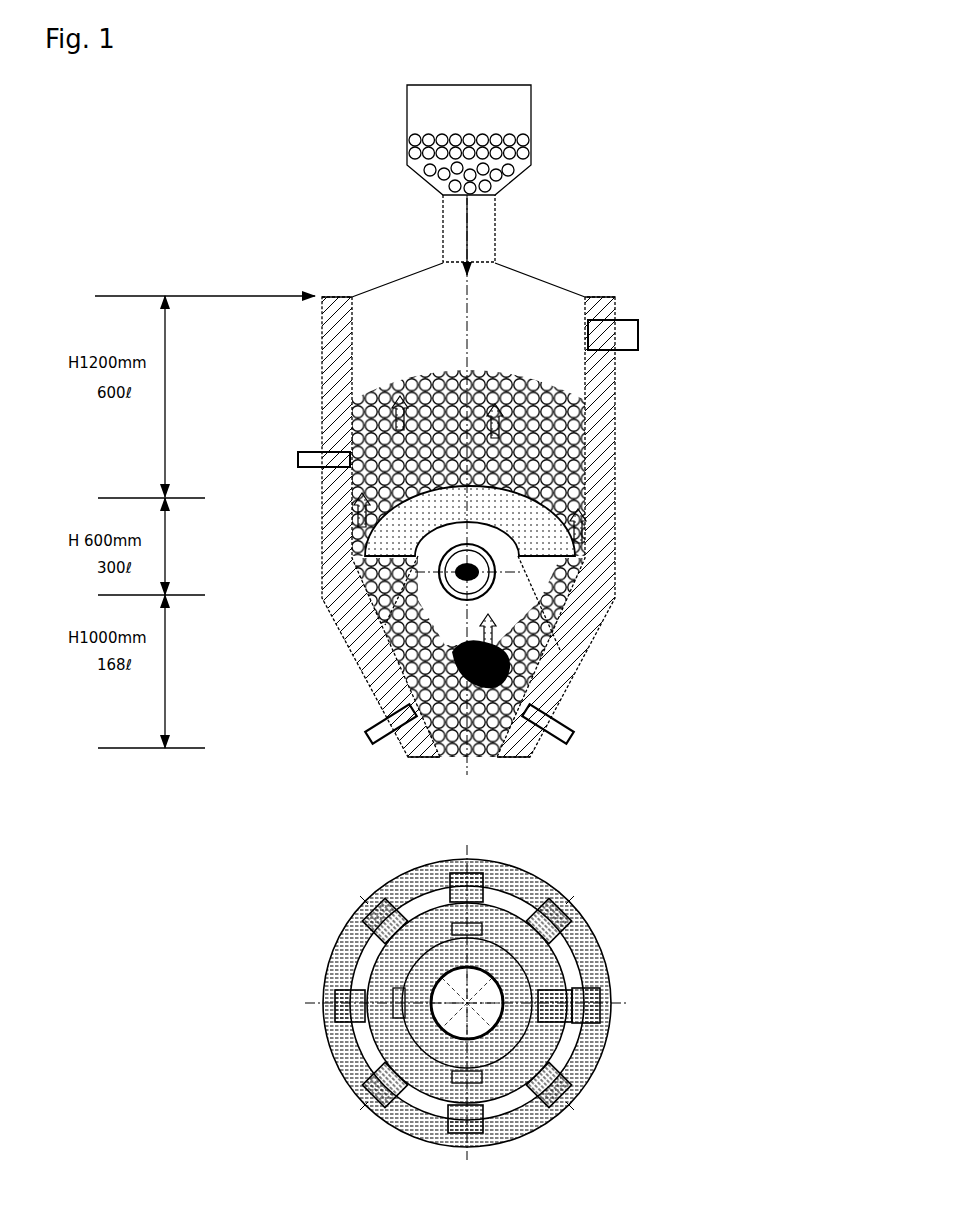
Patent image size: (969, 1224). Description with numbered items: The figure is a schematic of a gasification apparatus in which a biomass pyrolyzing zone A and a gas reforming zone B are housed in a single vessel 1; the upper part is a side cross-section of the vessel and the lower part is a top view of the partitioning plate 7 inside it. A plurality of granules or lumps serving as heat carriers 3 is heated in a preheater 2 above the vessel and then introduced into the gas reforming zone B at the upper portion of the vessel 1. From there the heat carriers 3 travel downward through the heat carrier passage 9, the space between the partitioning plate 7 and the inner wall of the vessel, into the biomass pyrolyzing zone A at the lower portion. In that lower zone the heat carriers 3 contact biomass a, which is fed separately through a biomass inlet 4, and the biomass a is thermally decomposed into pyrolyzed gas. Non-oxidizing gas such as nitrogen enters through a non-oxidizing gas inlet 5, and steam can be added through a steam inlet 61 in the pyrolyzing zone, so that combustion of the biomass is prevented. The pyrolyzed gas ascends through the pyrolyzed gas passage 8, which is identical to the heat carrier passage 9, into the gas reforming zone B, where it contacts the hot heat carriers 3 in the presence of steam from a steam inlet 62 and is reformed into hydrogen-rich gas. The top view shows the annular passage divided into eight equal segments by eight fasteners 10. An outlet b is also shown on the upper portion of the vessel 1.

The vessel 1 is at (550, 273).
The preheater 2 is at (490, 84).
The heat carriers 3 is at (515, 130).
The biomass inlet 4 is at (455, 588).
The non-oxidizing gas inlet 5 is at (575, 736).
The steam inlet 61 is at (365, 737).
The steam inlet 62 is at (294, 460).
The partitioning plate 7 is at (385, 528).
The pyrolyzed gas passage 8 is at (516, 764).
The heat carrier passage 9 is at (590, 548).
The fasteners 10 is at (594, 1001).
The biomass pyrolyzing zone A is at (522, 608).
The gas reforming zone B is at (572, 428).
The biomass a is at (455, 572).
The outlet box b is at (638, 318).